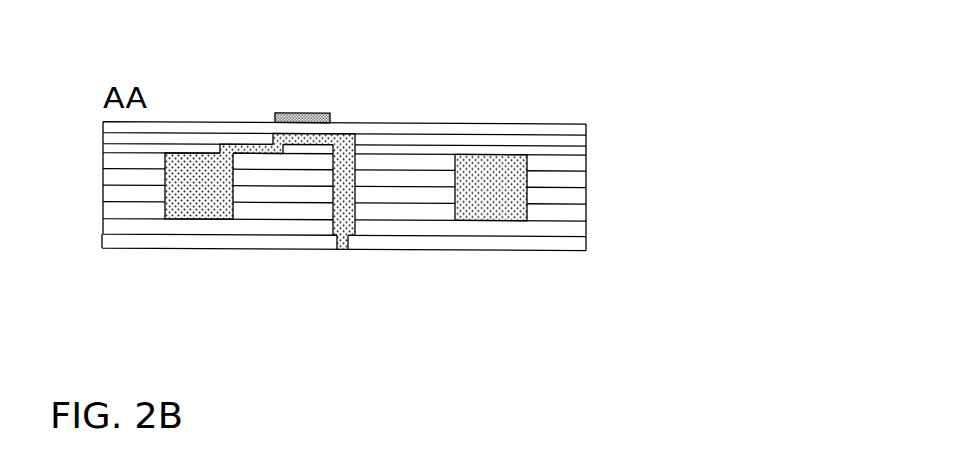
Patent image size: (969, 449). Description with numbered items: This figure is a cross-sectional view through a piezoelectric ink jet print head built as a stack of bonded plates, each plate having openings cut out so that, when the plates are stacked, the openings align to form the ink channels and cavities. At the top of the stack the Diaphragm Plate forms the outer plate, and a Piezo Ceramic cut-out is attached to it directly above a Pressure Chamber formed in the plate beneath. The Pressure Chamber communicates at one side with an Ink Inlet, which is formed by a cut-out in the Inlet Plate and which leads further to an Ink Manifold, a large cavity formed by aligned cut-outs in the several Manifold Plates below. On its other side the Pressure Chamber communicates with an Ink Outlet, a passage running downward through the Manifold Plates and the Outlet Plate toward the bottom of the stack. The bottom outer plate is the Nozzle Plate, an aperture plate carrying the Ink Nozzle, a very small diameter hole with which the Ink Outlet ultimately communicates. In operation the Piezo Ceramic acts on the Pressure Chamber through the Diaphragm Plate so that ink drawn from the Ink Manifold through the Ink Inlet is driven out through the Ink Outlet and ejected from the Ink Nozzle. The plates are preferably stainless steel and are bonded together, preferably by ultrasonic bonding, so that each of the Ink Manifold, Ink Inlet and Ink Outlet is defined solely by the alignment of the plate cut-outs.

The piezoelectric ceramic Piezo Ceramic is at (307, 112).
The pressure chamber Pressure Chamber is at (307, 133).
The diaphragm plate Diaphragm Plate is at (587, 124).
The inlet plate Inlet Plate is at (587, 150).
The manifold plates Manifold Plates is at (587, 168).
The outlet plate Outlet Plate is at (587, 228).
The nozzle plate Nozzle Plate is at (587, 243).
The ink manifold Ink Manifold is at (217, 208).
The ink inlet Ink Inlet is at (269, 146).
The ink outlet Ink Outlet is at (346, 189).
The ink nozzle Ink Nozzle is at (340, 247).